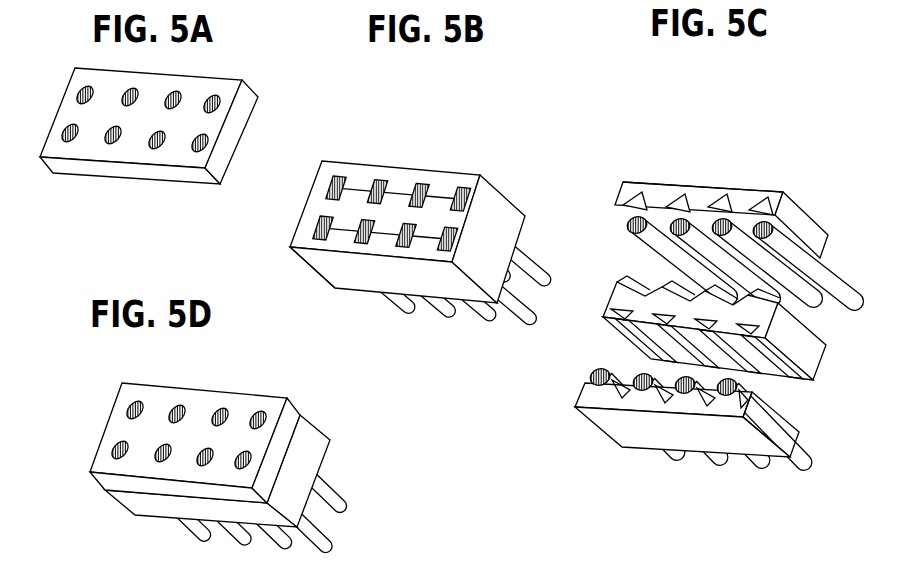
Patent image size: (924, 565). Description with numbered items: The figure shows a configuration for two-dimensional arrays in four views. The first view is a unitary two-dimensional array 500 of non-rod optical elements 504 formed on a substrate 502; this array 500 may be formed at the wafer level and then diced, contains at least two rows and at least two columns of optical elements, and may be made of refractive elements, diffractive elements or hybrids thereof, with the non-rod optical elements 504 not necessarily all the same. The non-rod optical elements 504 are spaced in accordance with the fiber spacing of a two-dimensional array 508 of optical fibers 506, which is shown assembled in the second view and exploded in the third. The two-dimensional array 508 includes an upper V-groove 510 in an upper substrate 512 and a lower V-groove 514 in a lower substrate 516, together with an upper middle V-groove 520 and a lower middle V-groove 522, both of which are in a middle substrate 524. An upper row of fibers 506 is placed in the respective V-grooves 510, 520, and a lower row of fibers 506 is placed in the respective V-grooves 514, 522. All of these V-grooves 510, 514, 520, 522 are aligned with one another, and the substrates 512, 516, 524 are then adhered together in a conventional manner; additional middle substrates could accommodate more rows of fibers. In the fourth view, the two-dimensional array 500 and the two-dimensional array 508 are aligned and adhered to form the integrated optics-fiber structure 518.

In FIG. 5A, the two-dimensional array 500 is at (174, 115).
In FIG. 5D, the two-dimensional array 500 is at (300, 400).
In FIG. 5A, the substrate 502 is at (238, 125).
In FIG. 5A, the non-rod optical elements 504 is at (76, 90).
In FIG. 5B, the optical fibers 506 is at (530, 264).
In FIG. 5C, the optical fibers 506 is at (803, 434).
In FIG. 5B, the two-dimensional array of optical fibers 508 is at (396, 203).
In FIG. 5C, the two-dimensional array of optical fibers 508 is at (730, 195).
In FIG. 5D, the two-dimensional array of optical fibers 508 is at (341, 433).
In FIG. 5B, the upper V-groove 510 is at (353, 177).
In FIG. 5C, the upper V-groove 510 is at (634, 190).
In FIG. 5B, the upper substrate 512 is at (438, 170).
In FIG. 5C, the upper substrate 512 is at (710, 186).
In FIG. 5B, the lower V-groove 514 is at (290, 248).
In FIG. 5C, the lower V-groove 514 is at (575, 408).
In FIG. 5B, the lower substrate 516 is at (332, 277).
In FIG. 5C, the lower substrate 516 is at (673, 428).
In FIG. 5D, the integrated optics-fiber structure 518 is at (239, 448).
In FIG. 5B, the upper middle V-groove 520 is at (329, 189).
In FIG. 5C, the upper middle V-groove 520 is at (643, 294).
In FIG. 5B, the lower middle V-groove 522 is at (316, 229).
In FIG. 5C, the lower middle V-groove 522 is at (612, 320).
In FIG. 5B, the middle substrate 524 is at (511, 250).
In FIG. 5C, the middle substrate 524 is at (728, 309).